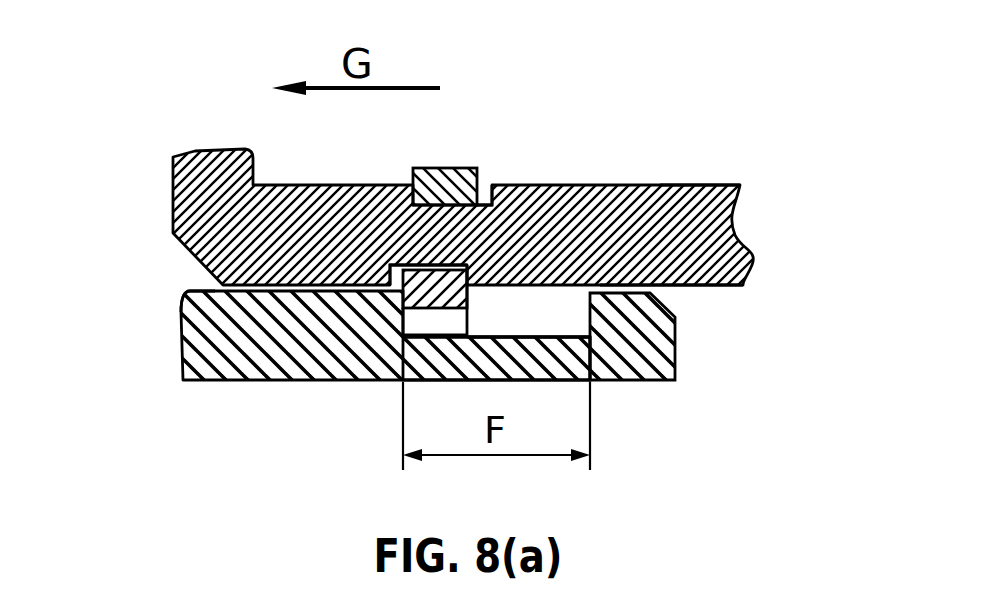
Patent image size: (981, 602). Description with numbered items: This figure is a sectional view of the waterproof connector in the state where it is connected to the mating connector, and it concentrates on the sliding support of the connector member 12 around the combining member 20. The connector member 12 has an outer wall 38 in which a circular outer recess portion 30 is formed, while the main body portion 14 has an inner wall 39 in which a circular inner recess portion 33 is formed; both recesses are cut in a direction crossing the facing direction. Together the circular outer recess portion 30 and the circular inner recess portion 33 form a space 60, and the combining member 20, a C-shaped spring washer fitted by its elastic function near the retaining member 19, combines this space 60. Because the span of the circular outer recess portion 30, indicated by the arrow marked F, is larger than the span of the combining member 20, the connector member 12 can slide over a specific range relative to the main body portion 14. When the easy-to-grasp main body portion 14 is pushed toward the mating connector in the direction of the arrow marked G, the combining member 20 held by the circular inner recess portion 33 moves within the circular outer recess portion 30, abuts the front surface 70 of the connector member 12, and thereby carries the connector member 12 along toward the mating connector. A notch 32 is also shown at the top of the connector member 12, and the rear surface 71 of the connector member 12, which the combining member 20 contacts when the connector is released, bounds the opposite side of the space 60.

The connector member 12 is at (196, 358).
The main body portion 14 is at (707, 185).
The retaining member 19 is at (447, 172).
The combining member 20 is at (425, 262).
The circular outer recess portion 30 is at (657, 185).
The recess / notch 32 is at (484, 200).
The circular inner recess portion 33 is at (390, 268).
The outer wall 38 is at (196, 291).
The inner wall 39 is at (693, 287).
The space 60 is at (445, 327).
The front surface 70 is at (409, 318).
The rear surface 71 is at (638, 333).